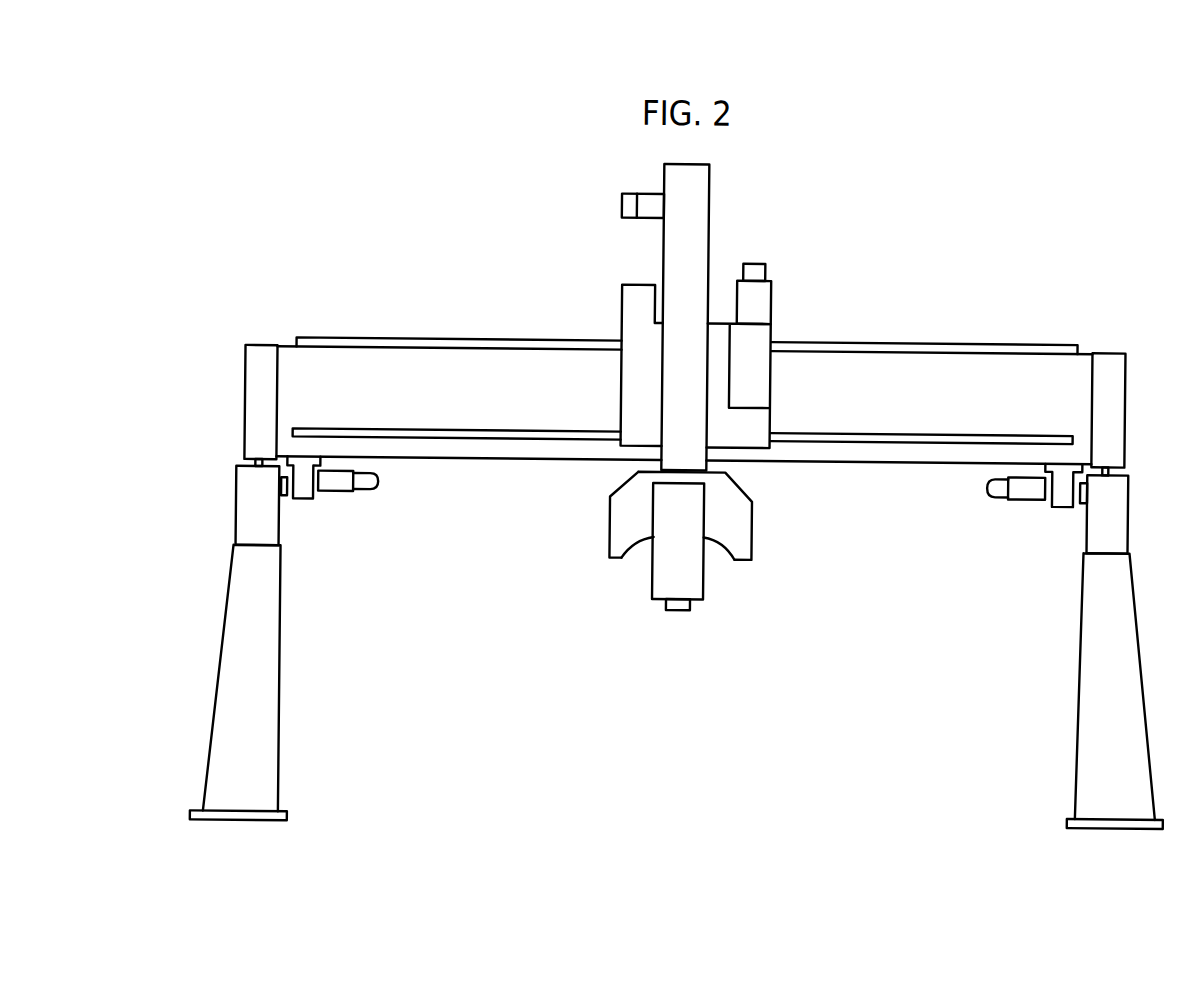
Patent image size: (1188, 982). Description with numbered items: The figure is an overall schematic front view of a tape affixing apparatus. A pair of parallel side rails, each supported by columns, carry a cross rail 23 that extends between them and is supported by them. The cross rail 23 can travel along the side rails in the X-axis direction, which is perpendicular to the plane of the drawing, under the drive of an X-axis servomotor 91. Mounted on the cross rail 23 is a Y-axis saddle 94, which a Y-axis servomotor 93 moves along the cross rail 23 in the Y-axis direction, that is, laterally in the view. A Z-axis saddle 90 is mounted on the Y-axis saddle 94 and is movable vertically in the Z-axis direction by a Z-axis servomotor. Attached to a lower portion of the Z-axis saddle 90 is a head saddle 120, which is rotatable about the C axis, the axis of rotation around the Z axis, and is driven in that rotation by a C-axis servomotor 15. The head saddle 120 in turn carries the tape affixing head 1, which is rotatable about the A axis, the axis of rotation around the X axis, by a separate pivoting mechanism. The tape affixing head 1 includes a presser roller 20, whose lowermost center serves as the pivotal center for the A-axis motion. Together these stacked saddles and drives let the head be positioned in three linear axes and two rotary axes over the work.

The tape affixing head 1 is at (658, 587).
The C-axis servomotor 15 is at (621, 206).
The presser roller 20 is at (694, 602).
The cross rail 23 is at (331, 355).
The Z-axis saddle 90 is at (710, 174).
The X-axis servomotor 91 is at (369, 488).
The Y-axis servomotor 93 is at (758, 288).
The Y-axis saddle 94 is at (750, 439).
The head saddle 120 is at (611, 514).